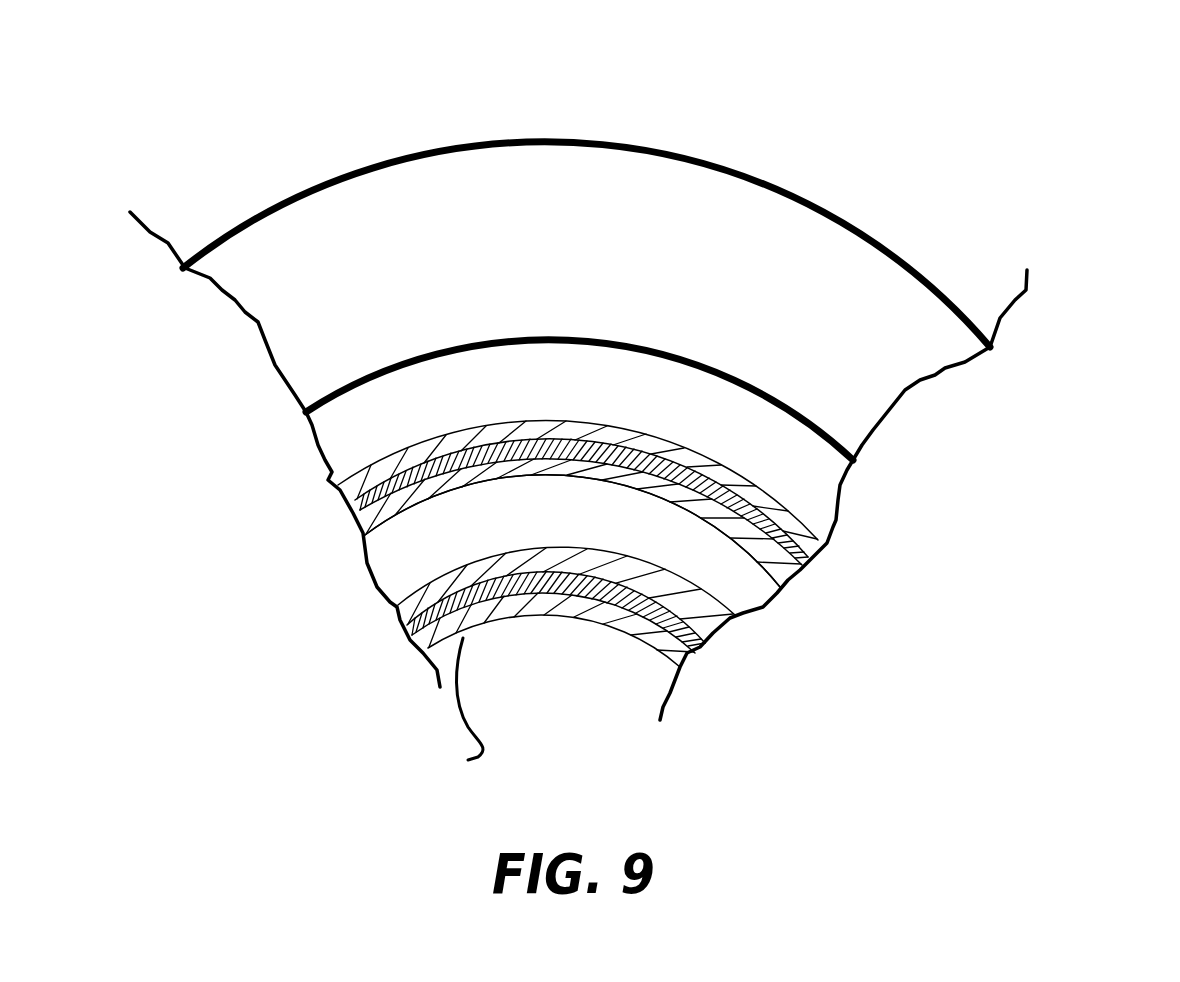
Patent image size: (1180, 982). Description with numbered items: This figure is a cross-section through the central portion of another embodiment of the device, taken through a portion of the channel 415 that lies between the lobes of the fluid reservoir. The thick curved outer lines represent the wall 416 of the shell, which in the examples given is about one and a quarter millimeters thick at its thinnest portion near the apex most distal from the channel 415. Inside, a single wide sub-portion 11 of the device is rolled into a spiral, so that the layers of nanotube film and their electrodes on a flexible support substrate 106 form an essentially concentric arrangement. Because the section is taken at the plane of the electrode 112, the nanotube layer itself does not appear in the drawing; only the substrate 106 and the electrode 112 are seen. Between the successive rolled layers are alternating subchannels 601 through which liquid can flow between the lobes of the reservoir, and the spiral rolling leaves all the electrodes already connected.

The sub-portion 11 is at (253, 555).
The substrate 106 is at (817, 552).
The electrode 112 is at (810, 575).
The channel 415 is at (250, 163).
The wall 416 is at (532, 248).
The subchannels 601 is at (637, 407).